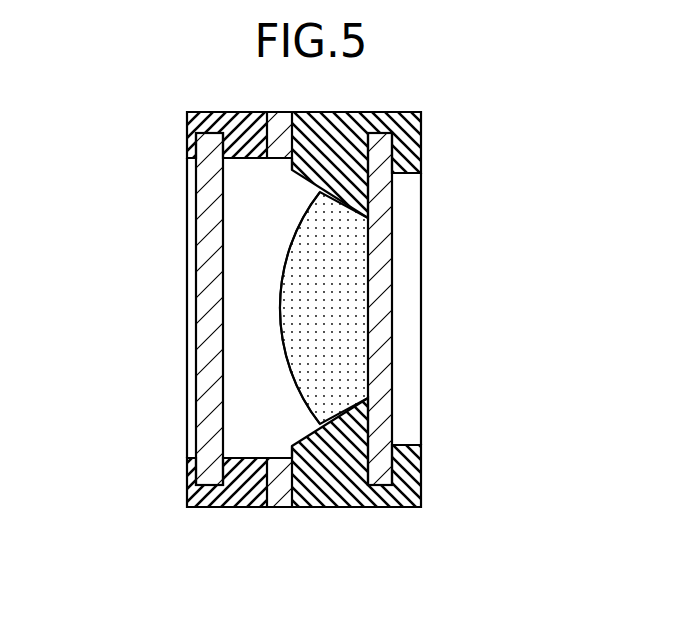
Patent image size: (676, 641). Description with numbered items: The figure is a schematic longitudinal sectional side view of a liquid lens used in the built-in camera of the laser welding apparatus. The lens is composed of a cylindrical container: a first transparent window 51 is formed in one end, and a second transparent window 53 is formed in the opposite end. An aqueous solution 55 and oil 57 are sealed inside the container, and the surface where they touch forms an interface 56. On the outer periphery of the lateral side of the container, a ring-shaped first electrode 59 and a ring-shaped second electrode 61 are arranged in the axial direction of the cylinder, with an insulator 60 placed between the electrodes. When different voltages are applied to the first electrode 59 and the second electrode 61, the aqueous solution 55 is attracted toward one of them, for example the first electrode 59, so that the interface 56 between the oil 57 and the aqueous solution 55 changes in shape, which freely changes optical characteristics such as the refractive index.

The first transparent window 51 is at (207, 197).
The second transparent window 53 is at (385, 385).
The aqueous solution 55 is at (247, 408).
The interface 56 is at (284, 345).
The oil 57 is at (345, 240).
The first electrode 59 is at (205, 508).
The insulator 60 is at (270, 508).
The second electrode 61 is at (353, 508).